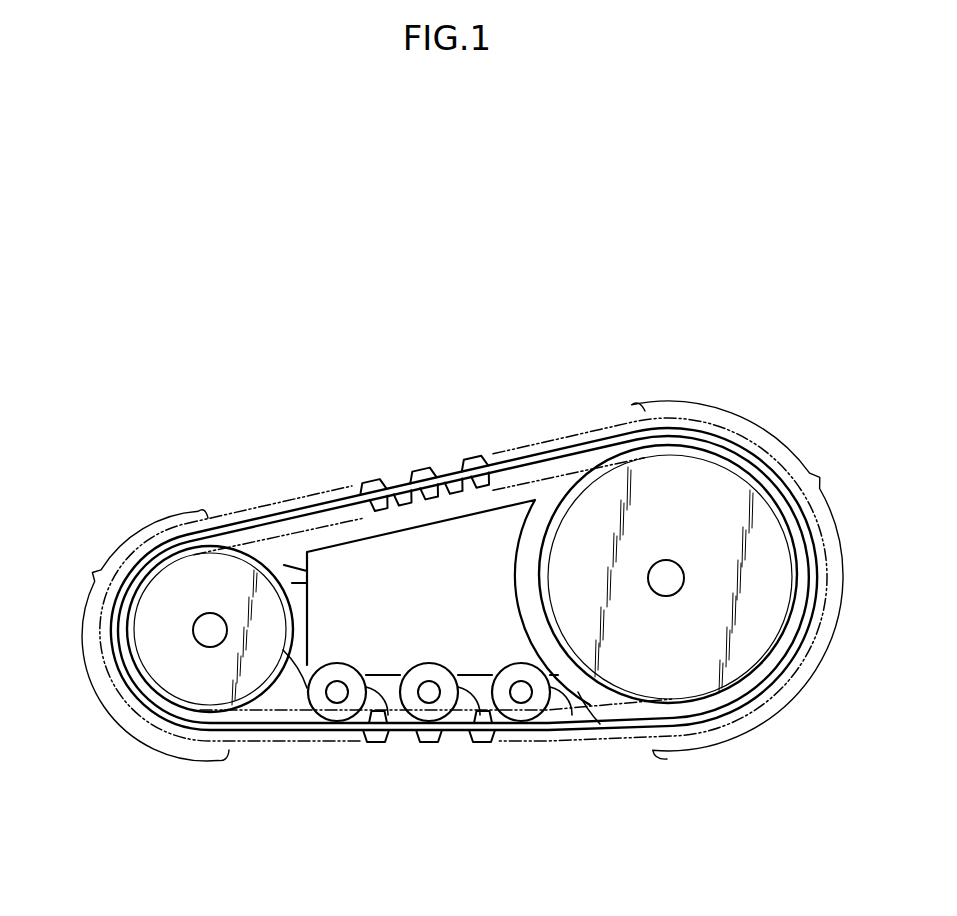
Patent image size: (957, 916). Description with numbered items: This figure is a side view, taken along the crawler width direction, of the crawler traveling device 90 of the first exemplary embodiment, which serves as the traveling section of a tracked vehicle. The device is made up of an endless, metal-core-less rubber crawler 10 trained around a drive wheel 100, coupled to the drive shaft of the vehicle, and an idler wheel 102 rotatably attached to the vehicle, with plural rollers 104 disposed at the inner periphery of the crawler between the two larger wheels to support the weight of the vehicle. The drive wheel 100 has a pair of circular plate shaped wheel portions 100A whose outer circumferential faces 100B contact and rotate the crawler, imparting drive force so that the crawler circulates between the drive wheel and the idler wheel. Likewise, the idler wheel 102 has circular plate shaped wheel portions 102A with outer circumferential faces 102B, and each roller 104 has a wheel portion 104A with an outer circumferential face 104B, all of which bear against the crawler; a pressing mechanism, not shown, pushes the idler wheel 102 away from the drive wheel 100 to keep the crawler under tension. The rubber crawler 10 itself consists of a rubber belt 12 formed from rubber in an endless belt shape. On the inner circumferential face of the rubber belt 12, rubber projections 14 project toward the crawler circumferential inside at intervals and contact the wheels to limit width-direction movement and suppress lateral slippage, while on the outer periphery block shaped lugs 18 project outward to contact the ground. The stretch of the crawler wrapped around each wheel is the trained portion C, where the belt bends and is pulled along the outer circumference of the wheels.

The crawler traveling device 90 is at (243, 355).
The rubber crawler 10 is at (613, 430).
The rubber belt 12 is at (499, 452).
The lugs 18 is at (418, 467).
The rubber projections 14 is at (366, 510).
The drive wheel 100 is at (526, 552).
The wheel portions 100A is at (580, 508).
The outer circumferential faces 100B is at (580, 694).
The idler wheel 102 is at (299, 588).
The wheel portions 102A is at (222, 572).
The outer circumferential faces 102B is at (292, 688).
The rollers 104 is at (350, 661).
The wheel portions 104A is at (337, 718).
The outer circumferential faces 104B is at (387, 717).
The trained portion C is at (453, 581).